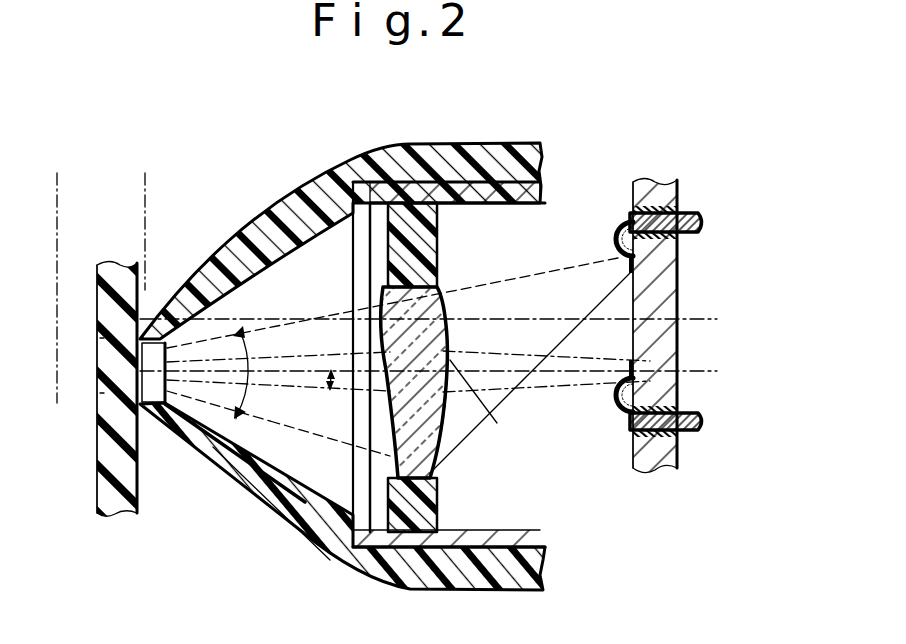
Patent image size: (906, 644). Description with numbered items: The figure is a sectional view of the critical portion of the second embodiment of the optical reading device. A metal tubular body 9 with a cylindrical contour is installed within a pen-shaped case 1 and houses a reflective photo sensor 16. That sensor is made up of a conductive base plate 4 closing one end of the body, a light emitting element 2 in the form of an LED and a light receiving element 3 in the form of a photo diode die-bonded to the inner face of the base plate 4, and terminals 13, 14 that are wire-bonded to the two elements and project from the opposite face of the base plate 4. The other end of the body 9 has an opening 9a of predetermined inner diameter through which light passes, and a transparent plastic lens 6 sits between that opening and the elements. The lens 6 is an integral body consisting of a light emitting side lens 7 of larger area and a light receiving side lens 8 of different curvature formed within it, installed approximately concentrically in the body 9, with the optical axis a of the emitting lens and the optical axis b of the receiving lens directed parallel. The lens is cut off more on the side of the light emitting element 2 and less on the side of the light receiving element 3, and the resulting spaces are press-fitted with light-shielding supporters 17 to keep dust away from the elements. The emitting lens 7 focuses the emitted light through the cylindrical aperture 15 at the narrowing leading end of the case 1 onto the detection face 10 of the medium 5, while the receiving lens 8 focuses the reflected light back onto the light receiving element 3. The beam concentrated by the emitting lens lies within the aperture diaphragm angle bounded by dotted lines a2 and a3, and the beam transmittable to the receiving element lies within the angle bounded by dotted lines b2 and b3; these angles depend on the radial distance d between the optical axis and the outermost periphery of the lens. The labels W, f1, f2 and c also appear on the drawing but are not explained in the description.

The pen-shaped case 1 is at (317, 193).
The light emitting element 2 is at (616, 247).
The light receiving element 3 is at (612, 395).
The base plate 4 is at (673, 195).
The medium 5 is at (113, 517).
The lens 6 is at (520, 448).
The light emitting side lens 7 is at (443, 310).
The light receiving side lens 8 is at (447, 366).
The cylindrical body 9 is at (452, 182).
The opening 9a is at (350, 512).
The detection face 10 is at (137, 493).
The terminal 13 is at (697, 233).
The terminal 14 is at (693, 434).
The aperture 15 is at (147, 410).
The reflective photo sensor 16 is at (686, 460).
The supporter 17 is at (427, 237).
The plate width W is at (145, 182).
The focal point f1 is at (100, 338).
The focal point f2 is at (100, 393).
The optical axis of light emitting side lens a is at (247, 330).
The dotted line of emitting aperture diaphragm a2 is at (300, 447).
The dotted line of emitting aperture diaphragm a3 is at (323, 307).
The optical axis of light receiving side lens b is at (303, 390).
The dotted line of receiving aperture diaphragm b2 is at (258, 398).
The dotted line of receiving aperture diaphragm b3 is at (333, 350).
The reference line c is at (696, 319).
The radial distance d is at (698, 371).